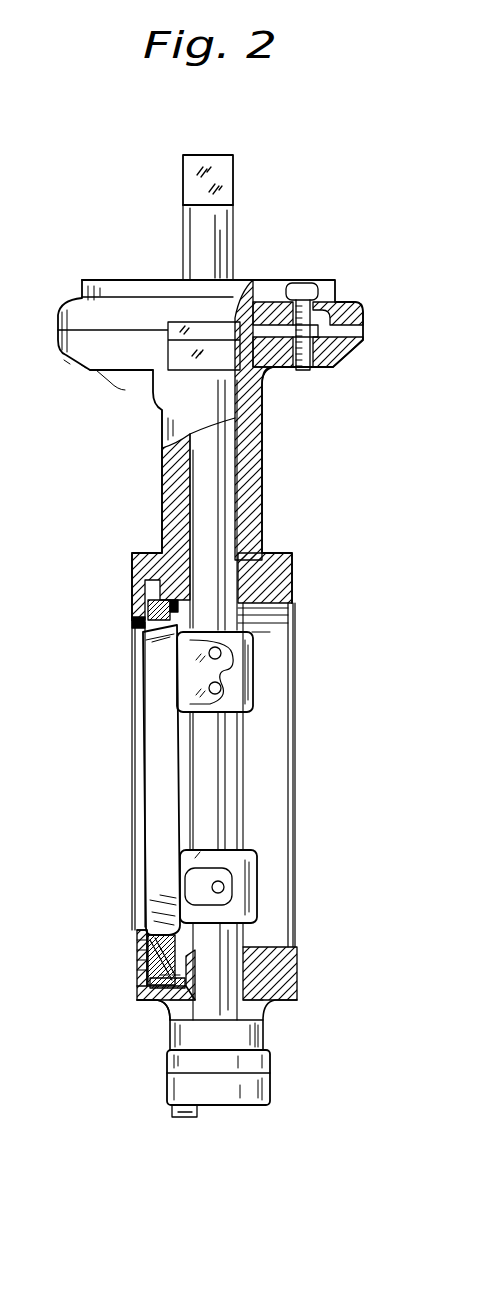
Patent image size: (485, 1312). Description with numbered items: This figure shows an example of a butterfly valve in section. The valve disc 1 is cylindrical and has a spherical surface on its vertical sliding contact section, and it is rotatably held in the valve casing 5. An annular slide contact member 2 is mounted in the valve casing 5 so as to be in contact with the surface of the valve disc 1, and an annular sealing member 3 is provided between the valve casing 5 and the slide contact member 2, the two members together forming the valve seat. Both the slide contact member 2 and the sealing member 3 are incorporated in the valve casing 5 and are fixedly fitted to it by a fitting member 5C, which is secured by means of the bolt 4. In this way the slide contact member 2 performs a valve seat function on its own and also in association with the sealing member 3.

The valve disc 1 is at (160, 867).
The annular slide contact member 2 is at (137, 628).
The annular sealing member 3 is at (143, 617).
The fastening bolt 4 is at (157, 1002).
The valve casing 5 is at (283, 963).
The fitting member 5C is at (138, 935).